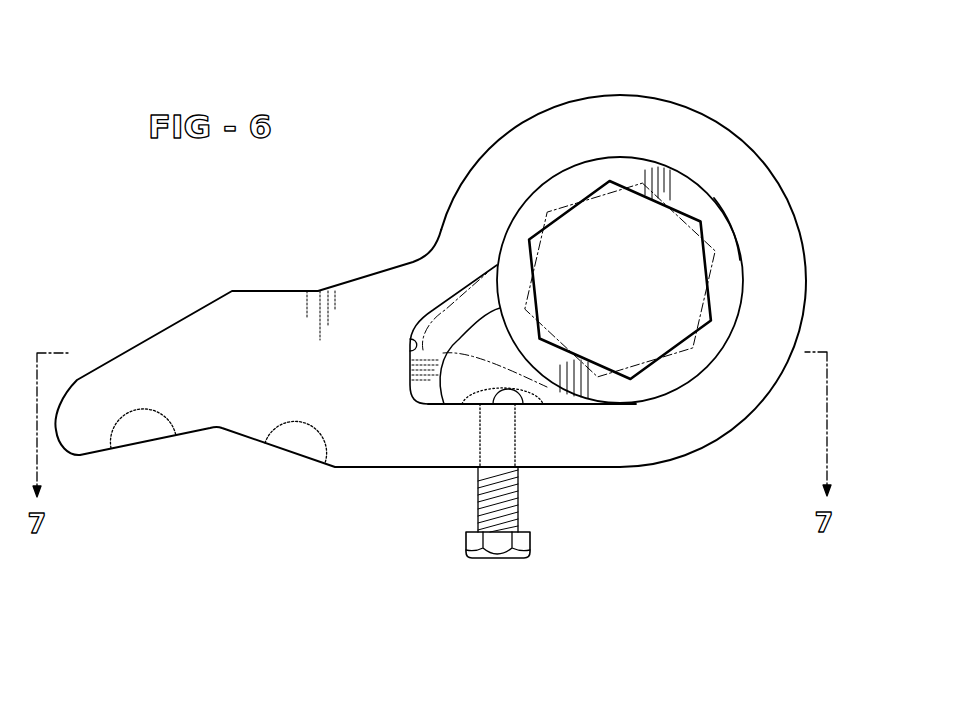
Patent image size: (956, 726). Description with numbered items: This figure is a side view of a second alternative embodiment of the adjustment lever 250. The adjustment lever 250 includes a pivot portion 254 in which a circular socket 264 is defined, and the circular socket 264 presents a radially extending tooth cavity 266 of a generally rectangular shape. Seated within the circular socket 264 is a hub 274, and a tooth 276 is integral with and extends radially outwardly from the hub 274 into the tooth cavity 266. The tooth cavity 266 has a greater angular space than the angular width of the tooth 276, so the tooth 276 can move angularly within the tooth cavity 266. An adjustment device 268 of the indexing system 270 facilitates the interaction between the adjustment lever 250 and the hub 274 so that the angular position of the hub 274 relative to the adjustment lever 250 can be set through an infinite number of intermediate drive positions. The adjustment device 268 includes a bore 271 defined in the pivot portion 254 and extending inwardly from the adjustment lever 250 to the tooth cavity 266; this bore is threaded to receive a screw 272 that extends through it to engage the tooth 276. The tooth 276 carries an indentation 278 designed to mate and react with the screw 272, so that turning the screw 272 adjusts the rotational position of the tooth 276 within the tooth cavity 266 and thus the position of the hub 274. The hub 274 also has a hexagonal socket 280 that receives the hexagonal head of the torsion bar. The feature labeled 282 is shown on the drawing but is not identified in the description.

The adjustment lever 250 is at (365, 148).
The pivot portion 254 is at (662, 118).
The circular socket 264 is at (552, 186).
The tooth cavity 266 is at (412, 344).
The adjustment device 268 is at (476, 469).
The indexing system 270 is at (463, 516).
The bore 271 is at (478, 445).
The screw 272 is at (518, 500).
The hub 274 is at (677, 375).
The tooth 276 is at (457, 383).
The indentation 278 is at (513, 402).
The hexagonal socket 280 is at (536, 290).
The aperture 282 is at (723, 212).